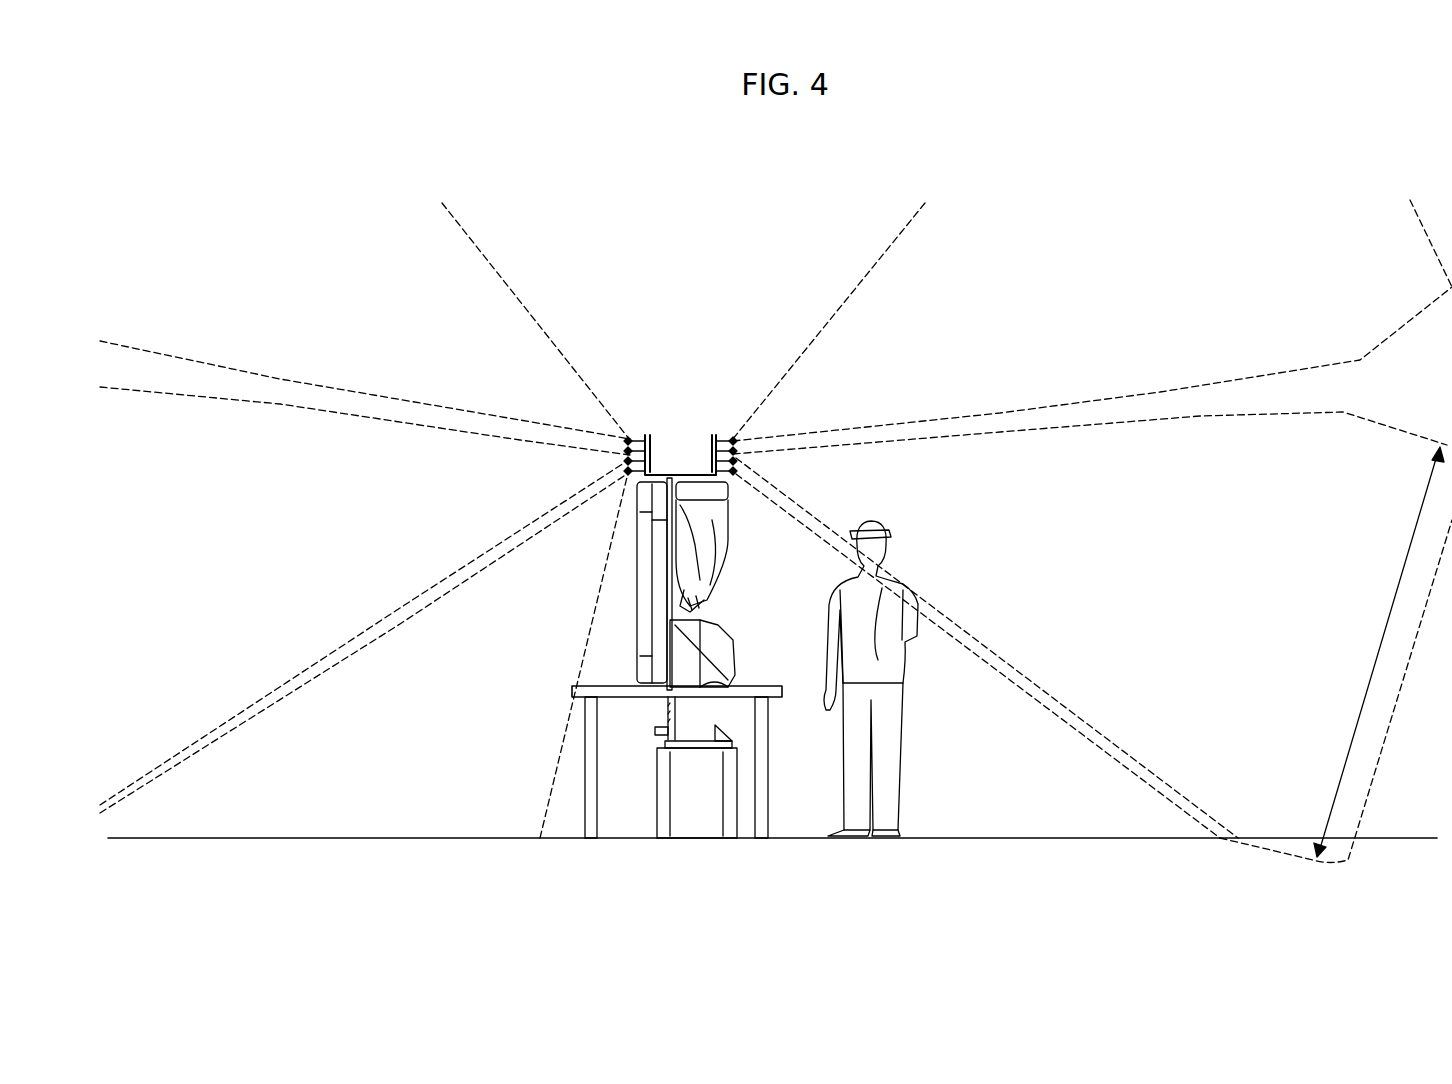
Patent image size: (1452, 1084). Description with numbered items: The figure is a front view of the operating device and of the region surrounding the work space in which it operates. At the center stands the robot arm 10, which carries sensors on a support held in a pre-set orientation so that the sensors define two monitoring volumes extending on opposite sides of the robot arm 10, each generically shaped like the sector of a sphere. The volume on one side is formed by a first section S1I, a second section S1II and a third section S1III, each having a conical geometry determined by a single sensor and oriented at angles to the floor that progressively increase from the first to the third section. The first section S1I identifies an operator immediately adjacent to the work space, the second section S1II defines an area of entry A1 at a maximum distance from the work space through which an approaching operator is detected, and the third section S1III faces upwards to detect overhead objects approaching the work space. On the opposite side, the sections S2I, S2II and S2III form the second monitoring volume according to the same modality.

The robot arm 10 is at (686, 452).
The first section S1I is at (1094, 668).
The second section S1II is at (1090, 625).
The third section S1III is at (1092, 320).
The first section S2I is at (365, 655).
The second section S2II is at (365, 596).
The third section S2III is at (365, 321).
The area of entry A1 is at (1379, 652).